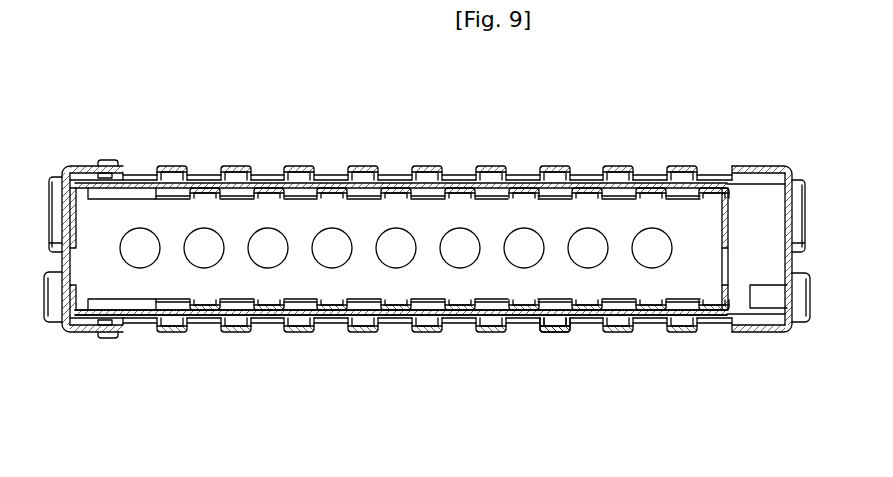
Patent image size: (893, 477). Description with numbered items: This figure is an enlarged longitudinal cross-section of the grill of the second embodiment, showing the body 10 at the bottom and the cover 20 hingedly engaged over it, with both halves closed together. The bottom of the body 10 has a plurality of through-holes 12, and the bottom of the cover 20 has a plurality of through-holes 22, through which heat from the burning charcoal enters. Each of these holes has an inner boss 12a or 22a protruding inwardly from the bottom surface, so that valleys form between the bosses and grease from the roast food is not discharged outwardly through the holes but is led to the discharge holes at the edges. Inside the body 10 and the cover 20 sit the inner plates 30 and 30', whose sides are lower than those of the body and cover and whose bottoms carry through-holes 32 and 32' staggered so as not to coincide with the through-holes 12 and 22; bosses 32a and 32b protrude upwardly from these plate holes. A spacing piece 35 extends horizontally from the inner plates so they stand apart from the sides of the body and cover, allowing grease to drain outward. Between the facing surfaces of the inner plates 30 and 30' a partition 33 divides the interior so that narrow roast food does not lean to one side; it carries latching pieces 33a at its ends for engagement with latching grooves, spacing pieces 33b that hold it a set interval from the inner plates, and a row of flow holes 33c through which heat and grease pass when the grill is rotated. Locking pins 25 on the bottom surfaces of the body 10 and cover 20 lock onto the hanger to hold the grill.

The body 10 is at (757, 333).
The through-holes 12 is at (587, 325).
The inner bosses 12a is at (555, 318).
The cover 20 is at (492, 173).
The through-holes 22 is at (587, 170).
The inner bosses 22a is at (606, 189).
The locking pins 25 is at (103, 160).
The inner plate 30 is at (427, 310).
The inner plate 30' is at (230, 133).
The through-holes 32 is at (619, 360).
The through-holes 32' is at (364, 140).
The boss 32a is at (338, 290).
The boss 32b is at (158, 199).
The partition 33 is at (423, 290).
The latching pieces 33a is at (727, 265).
The spacing pieces 33b is at (78, 312).
The flow holes 33c is at (398, 240).
The spacing piece 35 is at (750, 191).